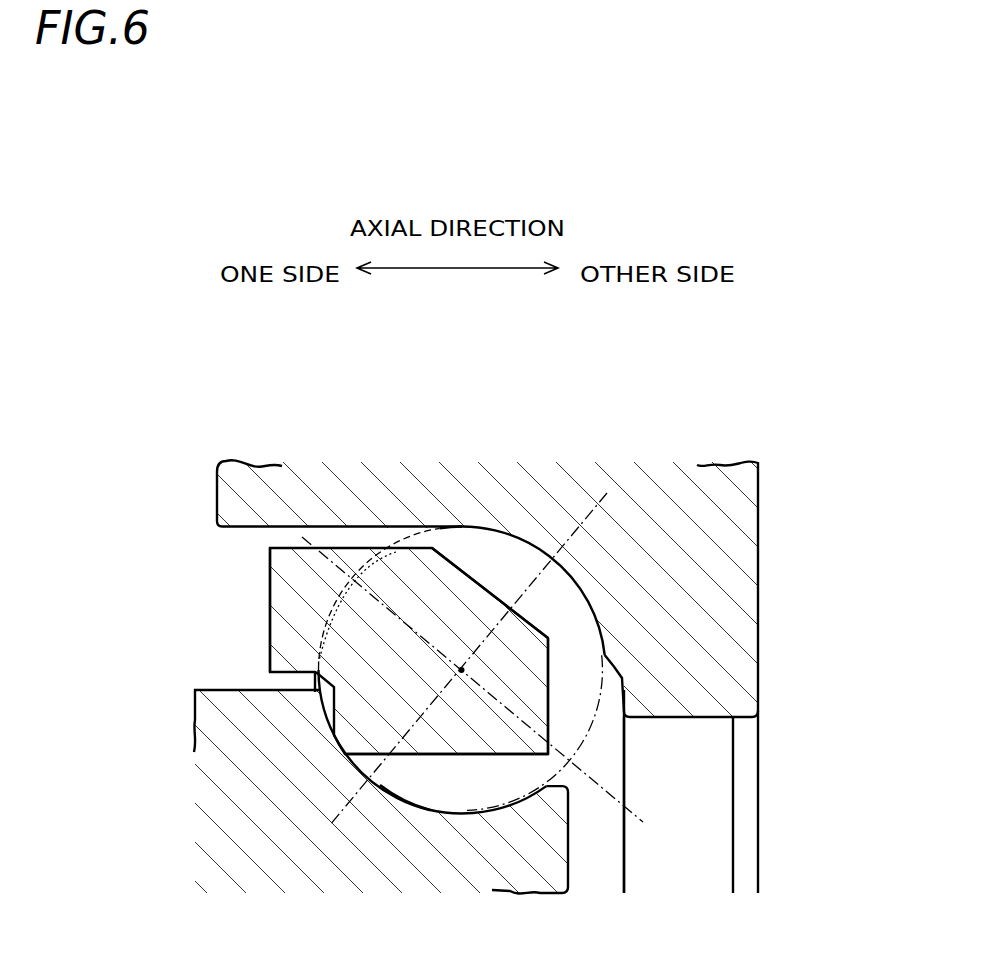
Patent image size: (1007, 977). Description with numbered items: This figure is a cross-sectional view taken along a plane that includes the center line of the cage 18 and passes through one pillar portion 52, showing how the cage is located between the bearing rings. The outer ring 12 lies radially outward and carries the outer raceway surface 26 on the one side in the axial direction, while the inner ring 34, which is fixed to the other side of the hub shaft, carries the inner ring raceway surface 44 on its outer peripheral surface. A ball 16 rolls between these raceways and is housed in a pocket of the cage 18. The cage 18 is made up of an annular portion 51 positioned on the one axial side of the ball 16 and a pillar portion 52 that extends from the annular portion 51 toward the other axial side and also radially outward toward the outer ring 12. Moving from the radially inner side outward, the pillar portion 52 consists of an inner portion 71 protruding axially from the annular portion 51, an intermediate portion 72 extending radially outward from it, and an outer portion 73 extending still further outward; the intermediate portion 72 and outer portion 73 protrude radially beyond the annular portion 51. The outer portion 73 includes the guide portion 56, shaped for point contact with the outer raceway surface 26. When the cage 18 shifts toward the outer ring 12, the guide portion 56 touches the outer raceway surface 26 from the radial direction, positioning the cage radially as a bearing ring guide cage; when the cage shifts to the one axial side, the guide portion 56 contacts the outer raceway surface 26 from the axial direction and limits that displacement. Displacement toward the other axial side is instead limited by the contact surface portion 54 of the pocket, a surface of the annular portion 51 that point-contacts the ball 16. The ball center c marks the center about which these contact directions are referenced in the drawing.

The outer ring 12 is at (575, 877).
The ball 16 is at (628, 761).
The cage 18 is at (246, 641).
The outer raceway surface 26 is at (396, 790).
The inner ring 34 is at (710, 593).
The inner ring raceway surface 44 is at (530, 547).
The annular portion 51 is at (280, 603).
The pillar portion 52 is at (482, 757).
The contact surface portion 54 is at (384, 570).
The guide portion 56 is at (338, 746).
The inner portion 71 is at (510, 582).
The intermediate portion 72 is at (571, 658).
The outer portion 73 is at (569, 723).
The ball center c is at (461, 670).